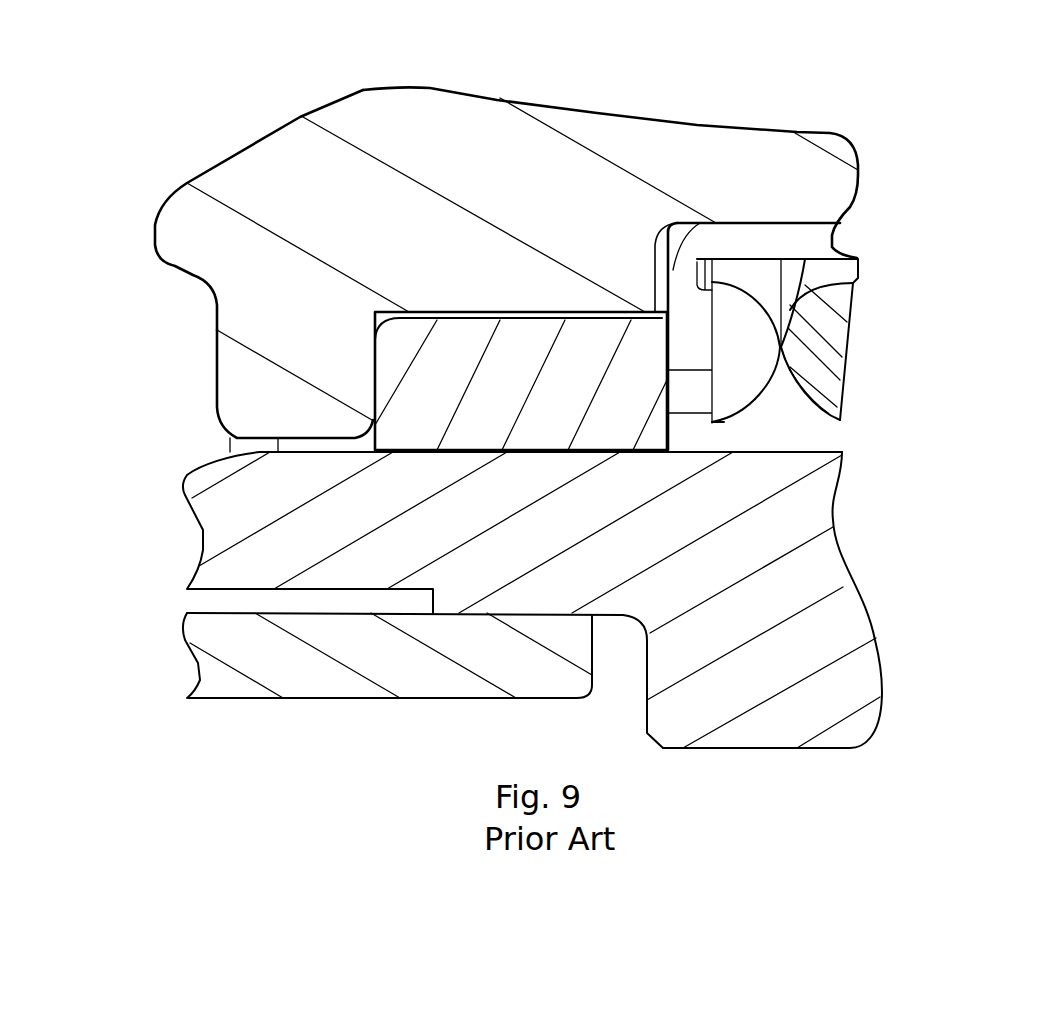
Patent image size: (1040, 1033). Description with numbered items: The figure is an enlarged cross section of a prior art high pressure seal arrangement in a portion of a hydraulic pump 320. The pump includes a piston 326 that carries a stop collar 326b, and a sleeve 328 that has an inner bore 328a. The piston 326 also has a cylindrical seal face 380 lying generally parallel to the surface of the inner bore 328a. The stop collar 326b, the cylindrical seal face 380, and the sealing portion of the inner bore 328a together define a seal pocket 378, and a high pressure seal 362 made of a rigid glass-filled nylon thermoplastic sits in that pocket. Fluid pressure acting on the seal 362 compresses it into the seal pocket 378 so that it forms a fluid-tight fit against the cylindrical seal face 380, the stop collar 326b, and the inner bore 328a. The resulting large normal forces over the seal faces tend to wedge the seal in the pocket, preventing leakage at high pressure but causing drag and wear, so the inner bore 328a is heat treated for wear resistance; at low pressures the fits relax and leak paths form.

The hydraulic pump 320 is at (858, 112).
The piston 326 is at (635, 148).
The stop collar 326b is at (245, 405).
The sleeve 328 is at (815, 627).
The inner bore 328a is at (815, 447).
The high pressure seal 362 is at (548, 430).
The seal pocket 378 is at (371, 306).
The cylindrical seal face 380 is at (612, 316).